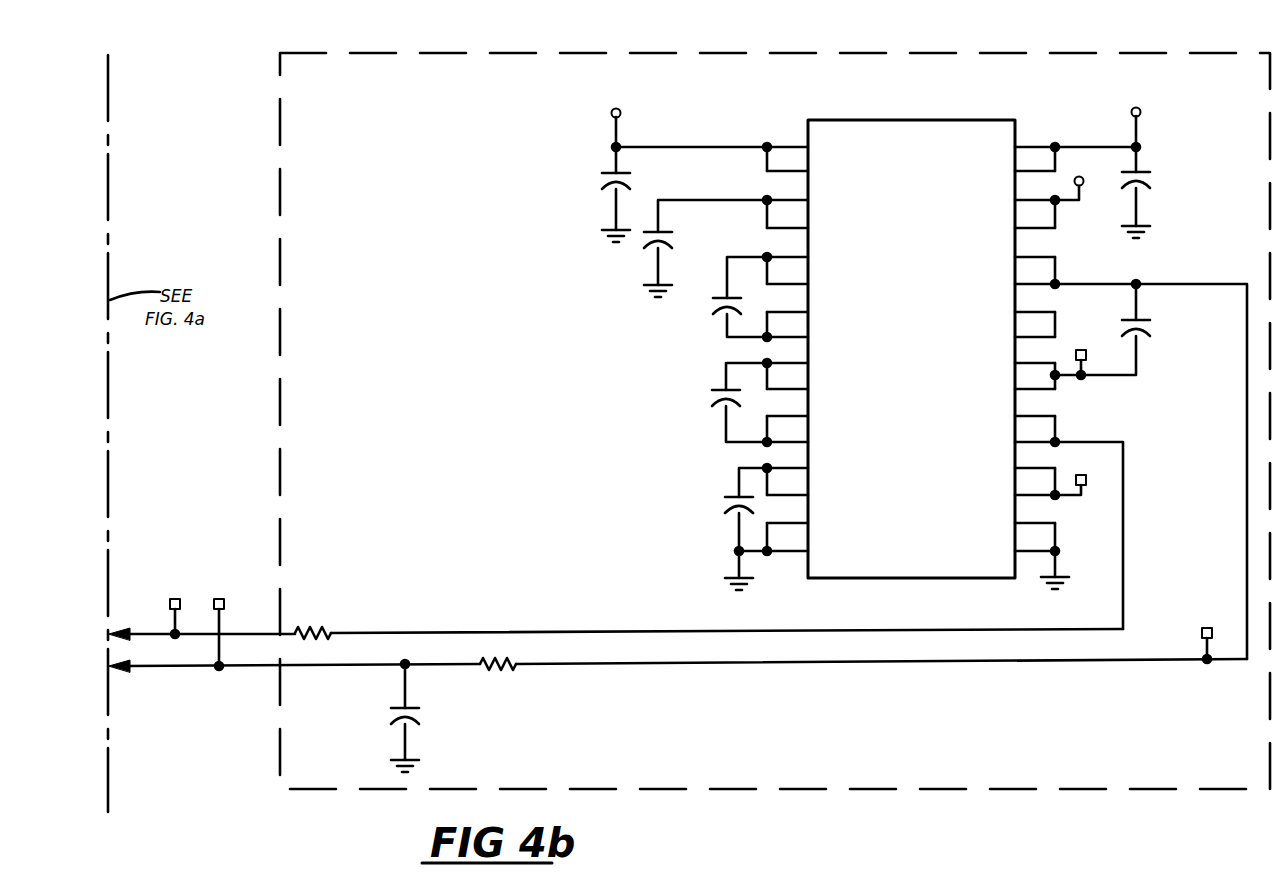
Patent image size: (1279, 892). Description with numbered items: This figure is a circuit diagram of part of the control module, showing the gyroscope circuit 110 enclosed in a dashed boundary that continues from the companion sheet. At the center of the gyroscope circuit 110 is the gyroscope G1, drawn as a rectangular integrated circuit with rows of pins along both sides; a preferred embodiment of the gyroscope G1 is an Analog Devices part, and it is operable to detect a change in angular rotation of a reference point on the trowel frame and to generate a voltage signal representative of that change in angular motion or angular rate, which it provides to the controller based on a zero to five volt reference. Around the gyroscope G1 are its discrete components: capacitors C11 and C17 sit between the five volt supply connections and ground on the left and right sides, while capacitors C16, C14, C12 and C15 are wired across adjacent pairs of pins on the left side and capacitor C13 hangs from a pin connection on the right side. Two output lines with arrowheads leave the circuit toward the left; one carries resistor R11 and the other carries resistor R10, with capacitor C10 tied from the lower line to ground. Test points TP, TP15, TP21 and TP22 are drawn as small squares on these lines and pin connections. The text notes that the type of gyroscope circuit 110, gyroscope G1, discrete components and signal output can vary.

The gyroscope circuit 110 is at (950, 53).
The gyroscope G1 is at (932, 244).
The capacitor C10 is at (430, 716).
The capacitor C11 is at (660, 164).
The capacitor C12 is at (719, 402).
The capacitor C13 is at (1149, 469).
The capacitor C14 is at (721, 297).
The capacitor C15 is at (723, 527).
The capacitor C16 is at (707, 246).
The capacitor C17 is at (1122, 162).
The resistor R10 is at (678, 655).
The resistor R11 is at (616, 624).
The test point TP is at (190, 625).
The test point TP15 is at (1208, 636).
The test point TP21 is at (1076, 477).
The test point TP22 is at (1076, 355).